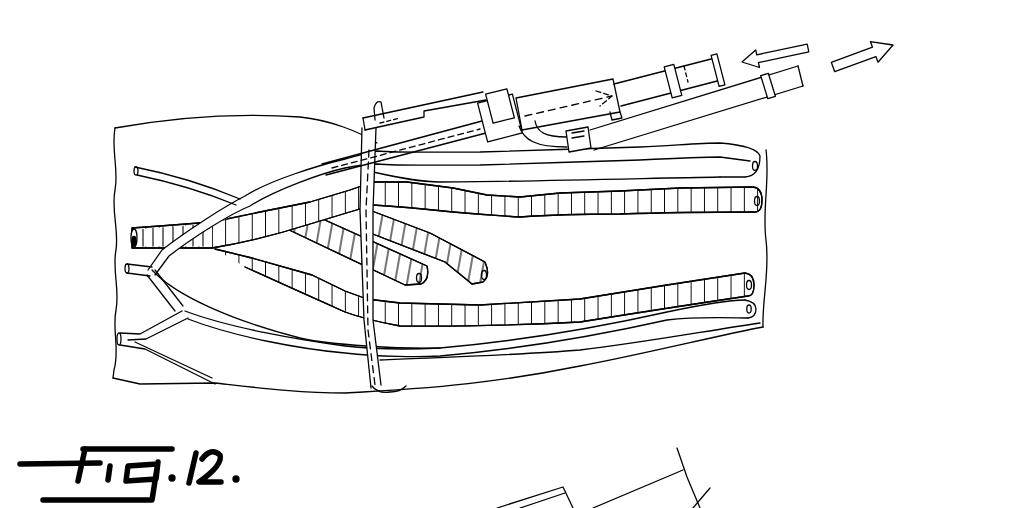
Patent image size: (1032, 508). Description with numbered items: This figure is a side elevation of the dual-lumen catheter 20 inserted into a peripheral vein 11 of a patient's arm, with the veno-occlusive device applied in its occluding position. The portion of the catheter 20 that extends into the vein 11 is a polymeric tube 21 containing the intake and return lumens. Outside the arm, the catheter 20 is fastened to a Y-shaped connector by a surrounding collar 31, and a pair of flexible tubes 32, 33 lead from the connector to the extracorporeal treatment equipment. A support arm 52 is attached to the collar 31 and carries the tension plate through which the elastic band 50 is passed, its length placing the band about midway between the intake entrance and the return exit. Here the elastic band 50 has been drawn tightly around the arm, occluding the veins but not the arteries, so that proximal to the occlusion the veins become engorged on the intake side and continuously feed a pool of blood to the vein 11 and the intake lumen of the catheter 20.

The vein 11 is at (309, 168).
The dual-lumen catheter 20 is at (461, 114).
The polymeric tube 21 is at (440, 127).
The collar 31 is at (512, 112).
The flexible tube 32 is at (737, 107).
The flexible tube 33 is at (624, 497).
The elastic band 50 is at (372, 390).
The support arm 52 is at (390, 115).